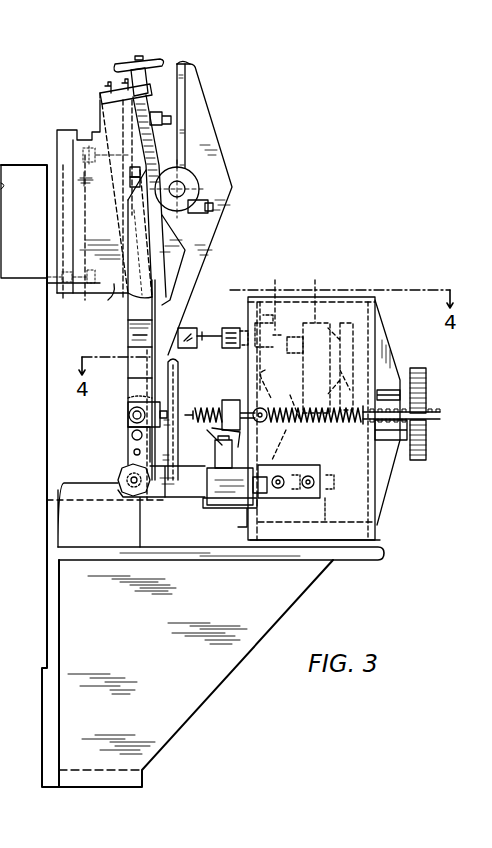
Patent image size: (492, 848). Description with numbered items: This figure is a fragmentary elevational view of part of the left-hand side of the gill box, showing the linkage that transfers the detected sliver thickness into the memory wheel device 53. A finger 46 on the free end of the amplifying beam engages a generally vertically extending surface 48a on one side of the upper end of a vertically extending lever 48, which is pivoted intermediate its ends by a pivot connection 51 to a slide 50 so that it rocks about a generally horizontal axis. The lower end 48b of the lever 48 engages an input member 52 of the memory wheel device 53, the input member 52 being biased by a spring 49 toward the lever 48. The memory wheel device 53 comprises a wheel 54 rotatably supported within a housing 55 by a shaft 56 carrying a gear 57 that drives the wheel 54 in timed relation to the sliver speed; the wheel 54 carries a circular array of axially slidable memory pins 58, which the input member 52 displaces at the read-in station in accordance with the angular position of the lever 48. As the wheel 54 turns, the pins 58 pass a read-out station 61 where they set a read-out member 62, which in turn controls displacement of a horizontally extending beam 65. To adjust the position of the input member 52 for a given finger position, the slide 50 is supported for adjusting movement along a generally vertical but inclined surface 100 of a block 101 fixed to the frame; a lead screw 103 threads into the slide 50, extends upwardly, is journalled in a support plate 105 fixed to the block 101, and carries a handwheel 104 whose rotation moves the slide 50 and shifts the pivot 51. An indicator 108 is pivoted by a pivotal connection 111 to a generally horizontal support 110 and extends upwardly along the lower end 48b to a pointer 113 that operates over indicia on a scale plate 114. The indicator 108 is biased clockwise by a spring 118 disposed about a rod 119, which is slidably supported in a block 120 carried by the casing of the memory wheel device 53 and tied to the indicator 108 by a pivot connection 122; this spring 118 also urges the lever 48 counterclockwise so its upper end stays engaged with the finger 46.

The finger 46 is at (168, 116).
The lever 48 is at (236, 184).
The vertically extending surface 48a is at (176, 66).
The lower end 48b is at (180, 384).
The spring 49 is at (214, 441).
The slide 50 is at (132, 196).
The pivot connection 51 is at (205, 182).
The input member 52 is at (205, 408).
The memory wheel device 53 is at (342, 299).
The wheel 54 is at (316, 298).
The housing 55 is at (372, 518).
The shaft 56 is at (426, 410).
The gear 57 is at (426, 386).
The memory pins 58 is at (375, 323).
The read-out station 61 is at (280, 315).
The read-out member 62 is at (229, 331).
The beam 65 is at (195, 329).
The inclined surface 100 is at (160, 265).
The block 101 is at (108, 290).
The lead screw 103 is at (150, 145).
The handwheel 104 is at (147, 62).
The support plate 105 is at (106, 88).
The indicator 108 is at (128, 342).
The support 110 is at (161, 490).
The pivotal connection 111 is at (123, 499).
The pointer 113 is at (130, 182).
The scale plate 114 is at (131, 166).
The spring 118 is at (306, 425).
The rod 119 is at (440, 418).
The block 120 is at (268, 408).
The pivot connection 122 is at (128, 415).